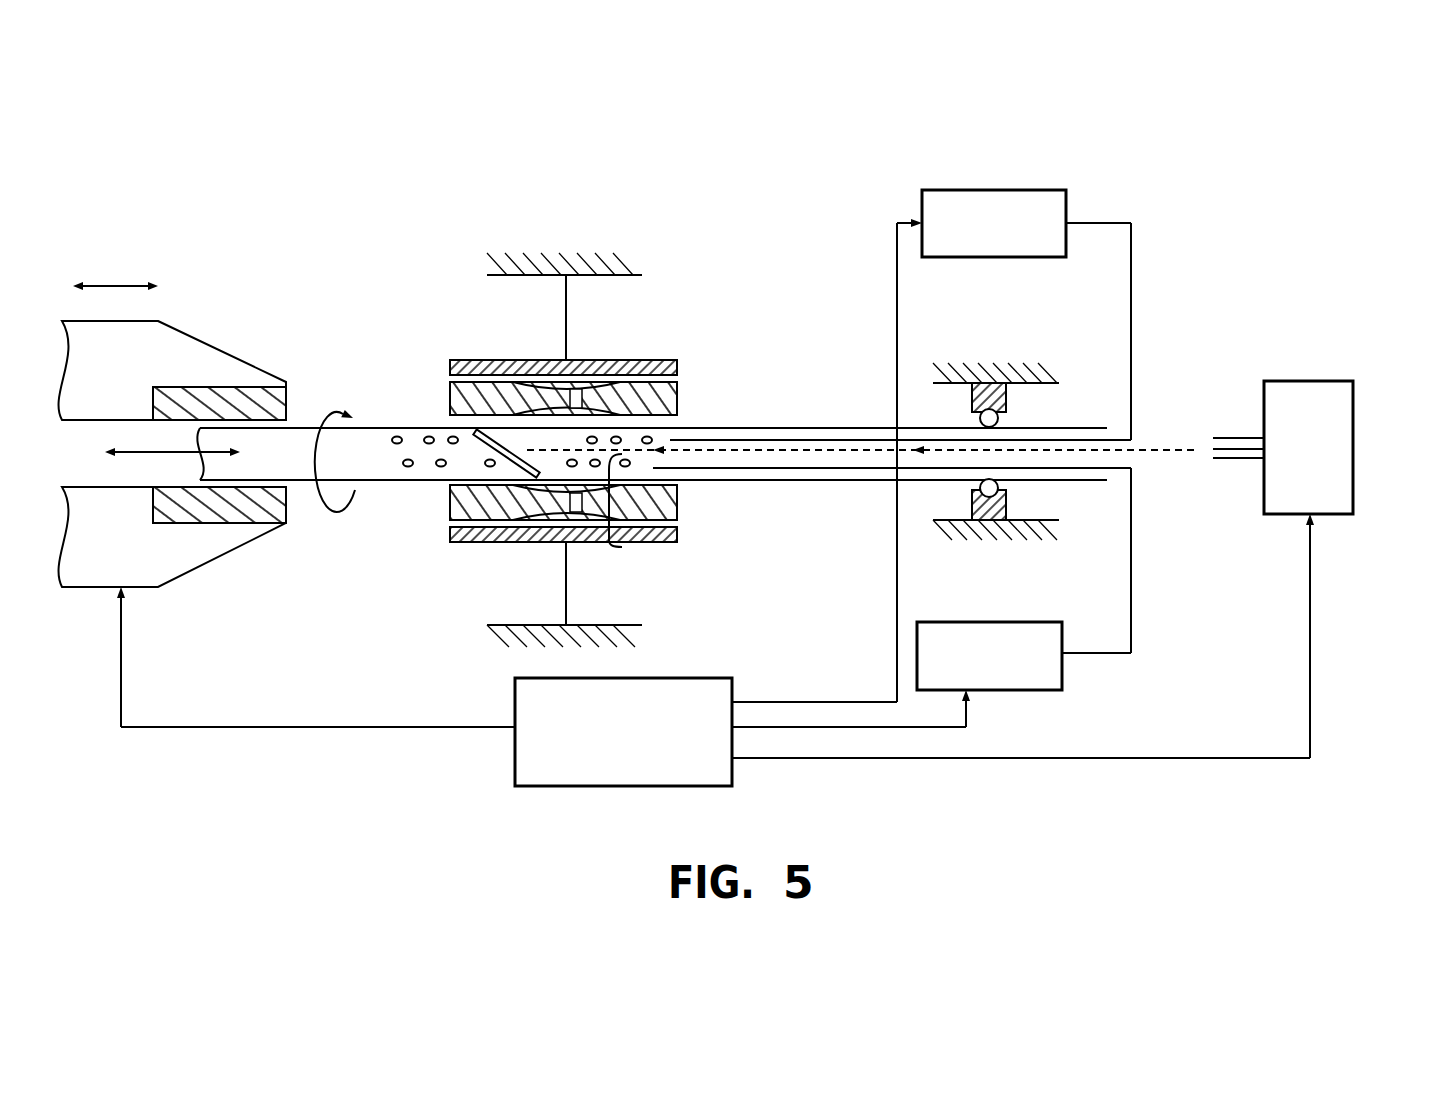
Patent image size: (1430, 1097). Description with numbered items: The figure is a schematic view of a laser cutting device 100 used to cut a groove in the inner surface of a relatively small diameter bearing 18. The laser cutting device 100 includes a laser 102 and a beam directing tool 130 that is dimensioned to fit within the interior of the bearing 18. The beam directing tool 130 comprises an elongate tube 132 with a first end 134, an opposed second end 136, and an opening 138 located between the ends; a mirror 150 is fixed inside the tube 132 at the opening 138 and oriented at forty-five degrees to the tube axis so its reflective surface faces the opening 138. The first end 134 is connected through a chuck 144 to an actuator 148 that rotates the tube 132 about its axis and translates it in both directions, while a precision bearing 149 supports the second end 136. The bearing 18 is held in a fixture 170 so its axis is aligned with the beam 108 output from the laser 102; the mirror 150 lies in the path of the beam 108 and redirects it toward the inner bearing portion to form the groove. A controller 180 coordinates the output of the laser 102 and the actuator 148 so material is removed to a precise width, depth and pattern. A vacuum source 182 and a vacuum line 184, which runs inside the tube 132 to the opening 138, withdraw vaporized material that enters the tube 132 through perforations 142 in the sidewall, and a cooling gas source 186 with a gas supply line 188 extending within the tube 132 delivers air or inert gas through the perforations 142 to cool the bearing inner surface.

The laser cutting device 100 is at (391, 194).
The actuator 148 is at (178, 338).
The chuck 144 is at (240, 512).
The first end 134 is at (240, 428).
The perforations 142 is at (430, 436).
The opening 138 is at (522, 438).
The mirror 150 is at (482, 442).
The fixture 170 is at (640, 360).
The beam directing tool 130 is at (758, 372).
The elongate tube 132 is at (785, 427).
The second end 136 is at (1085, 427).
The precision bearing 149 is at (988, 383).
The bearing 18 is at (667, 504).
The controller 180 is at (682, 678).
The vacuum source 182 is at (989, 190).
The vacuum line 184 is at (1112, 223).
The cooling gas source 186 is at (1023, 690).
The gas supply line 188 is at (1132, 627).
The laser 102 is at (1330, 381).
The beam 108 is at (1150, 448).